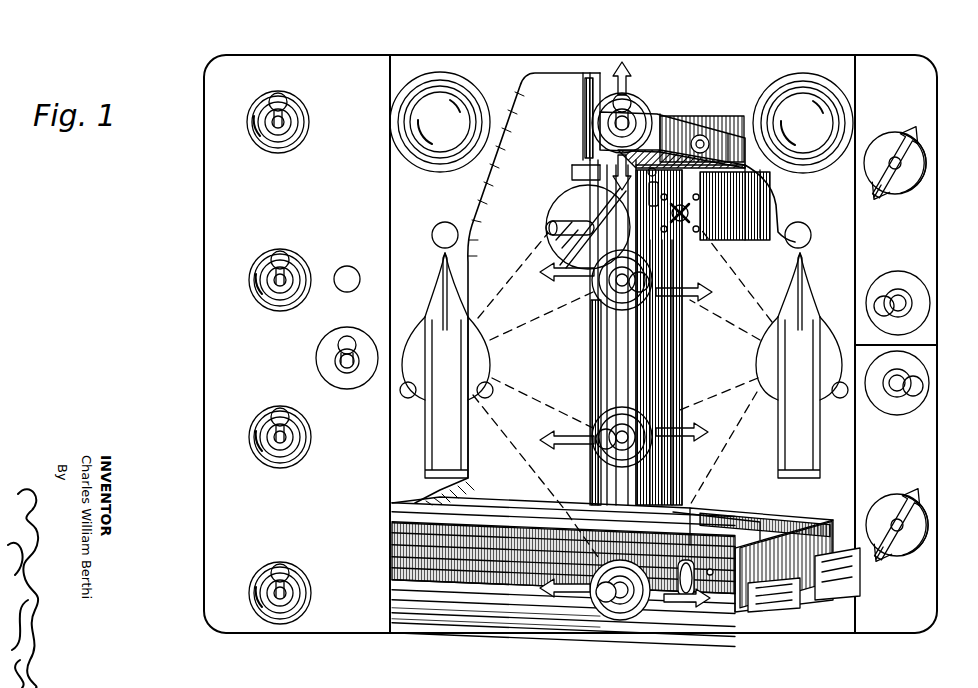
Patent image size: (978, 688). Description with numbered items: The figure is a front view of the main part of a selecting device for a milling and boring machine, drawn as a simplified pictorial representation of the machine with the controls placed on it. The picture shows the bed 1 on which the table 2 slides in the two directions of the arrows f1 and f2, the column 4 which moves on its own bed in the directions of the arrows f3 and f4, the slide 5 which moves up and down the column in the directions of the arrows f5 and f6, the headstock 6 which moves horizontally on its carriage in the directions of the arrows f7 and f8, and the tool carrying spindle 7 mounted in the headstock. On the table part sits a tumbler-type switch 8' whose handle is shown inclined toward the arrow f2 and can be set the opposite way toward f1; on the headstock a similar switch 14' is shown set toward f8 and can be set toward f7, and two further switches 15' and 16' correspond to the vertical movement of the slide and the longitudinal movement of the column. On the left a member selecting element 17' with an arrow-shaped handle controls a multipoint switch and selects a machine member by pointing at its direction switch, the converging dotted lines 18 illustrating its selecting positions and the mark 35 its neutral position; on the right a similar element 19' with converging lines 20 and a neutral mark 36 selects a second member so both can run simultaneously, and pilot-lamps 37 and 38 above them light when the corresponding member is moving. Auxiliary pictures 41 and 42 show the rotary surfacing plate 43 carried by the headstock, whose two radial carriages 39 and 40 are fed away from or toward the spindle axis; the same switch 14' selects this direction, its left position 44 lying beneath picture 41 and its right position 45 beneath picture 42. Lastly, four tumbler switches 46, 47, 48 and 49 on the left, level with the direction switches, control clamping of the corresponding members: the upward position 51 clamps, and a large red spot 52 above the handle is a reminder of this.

The bed 1 is at (796, 590).
The table 2 is at (508, 523).
The column 4 is at (678, 352).
The slide 5 is at (716, 142).
The headstock 6 is at (748, 200).
The tool carrying spindle 7 is at (552, 230).
The switch 8' is at (651, 608).
The switch 14' is at (605, 297).
The switch 15' is at (657, 119).
The switch 16' is at (612, 441).
The member selecting element 17' is at (458, 365).
The converging dotted lines 18 is at (512, 278).
The member selecting element 19' is at (802, 365).
The converging lines 20 is at (760, 310).
The neutral position 35 is at (444, 221).
The reference mark for neutral position 36 is at (805, 223).
The pilot-lamp 37 is at (467, 95).
The pilot-lamp 38 is at (797, 92).
The radial carriage 39 is at (560, 212).
The radial carriage 40 is at (562, 250).
The auxiliary picture 41 is at (918, 173).
The auxiliary picture 42 is at (916, 528).
The representation of the surfacing plate 43 is at (575, 190).
The handle position 44 is at (922, 293).
The handle position 45 is at (918, 370).
The tumbler switch 46 is at (295, 118).
The tumbler switch 47 is at (268, 306).
The tumbler switch 48 is at (292, 437).
The tumbler switch 49 is at (296, 586).
The clamping position 51 is at (347, 372).
The red spot 52 is at (347, 266).
The arrow f1 is at (688, 603).
The arrow f2 is at (560, 595).
The arrow f3 is at (567, 448).
The arrow f4 is at (683, 436).
The arrow f5 is at (640, 70).
The arrow f6 is at (615, 172).
The arrow f7 is at (566, 278).
The arrow f8 is at (692, 296).